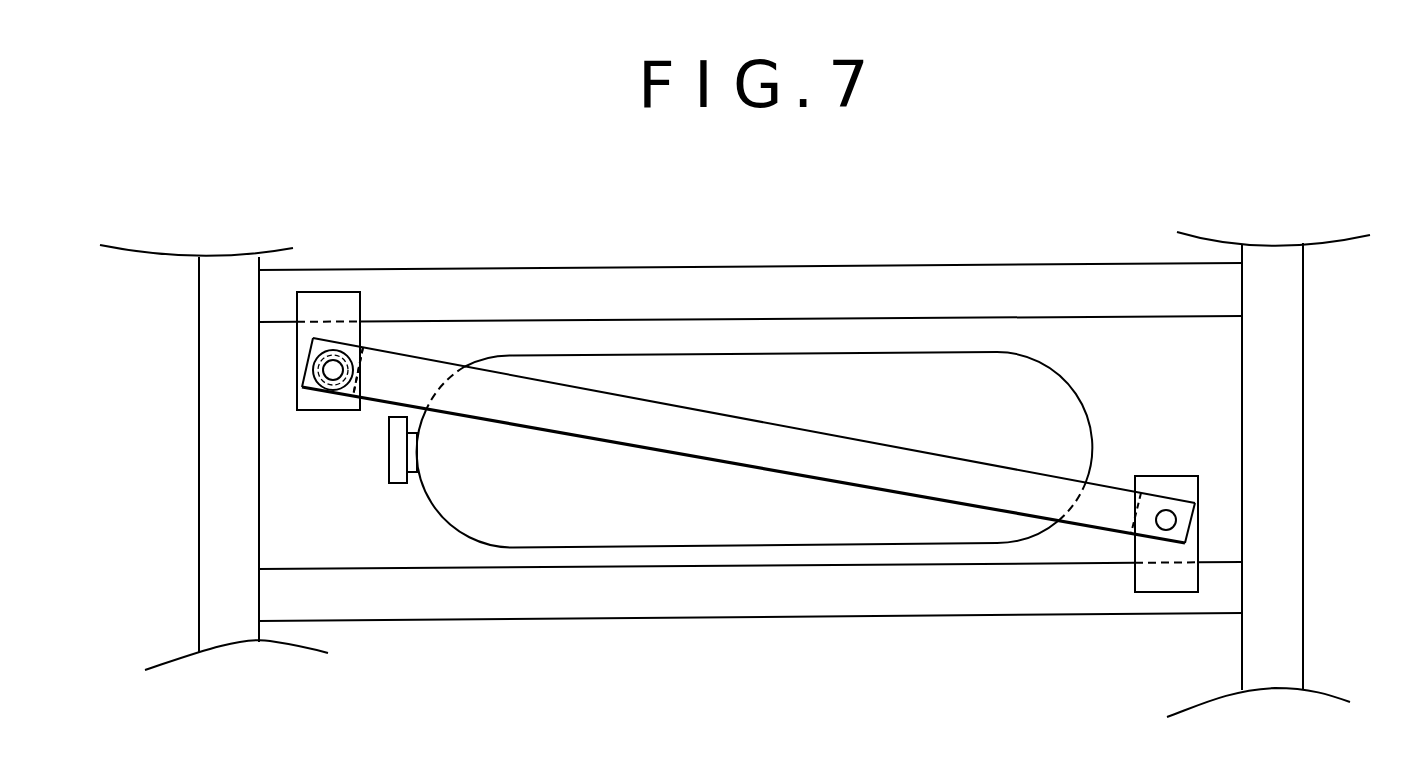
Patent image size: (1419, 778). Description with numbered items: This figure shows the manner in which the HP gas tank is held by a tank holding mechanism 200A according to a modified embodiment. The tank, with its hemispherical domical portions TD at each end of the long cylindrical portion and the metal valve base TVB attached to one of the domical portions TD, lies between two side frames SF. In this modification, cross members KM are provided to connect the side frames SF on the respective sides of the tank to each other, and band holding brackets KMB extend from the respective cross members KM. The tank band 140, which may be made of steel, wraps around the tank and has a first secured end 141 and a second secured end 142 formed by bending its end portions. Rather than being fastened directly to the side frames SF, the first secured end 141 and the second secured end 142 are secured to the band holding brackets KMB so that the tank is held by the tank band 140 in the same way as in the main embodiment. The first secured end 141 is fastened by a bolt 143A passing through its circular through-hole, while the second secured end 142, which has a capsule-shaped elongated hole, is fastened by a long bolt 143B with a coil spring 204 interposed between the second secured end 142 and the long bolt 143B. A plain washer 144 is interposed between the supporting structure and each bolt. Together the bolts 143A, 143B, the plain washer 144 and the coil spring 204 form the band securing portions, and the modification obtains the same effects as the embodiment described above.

The tank holding mechanism 200A is at (528, 236).
The cross member KM is at (622, 298).
The band holding bracket KMB is at (313, 303).
The side frame SF is at (1277, 320).
The domical portion TD is at (455, 488).
The valve base TVB is at (395, 483).
The tank band 140 is at (552, 403).
The first secured end 141 is at (1177, 502).
The second secured end 142 is at (358, 412).
The bolt 143A is at (1172, 525).
The long bolt 143B is at (328, 368).
The plain washer 144 is at (332, 347).
The coil spring 204 is at (360, 348).